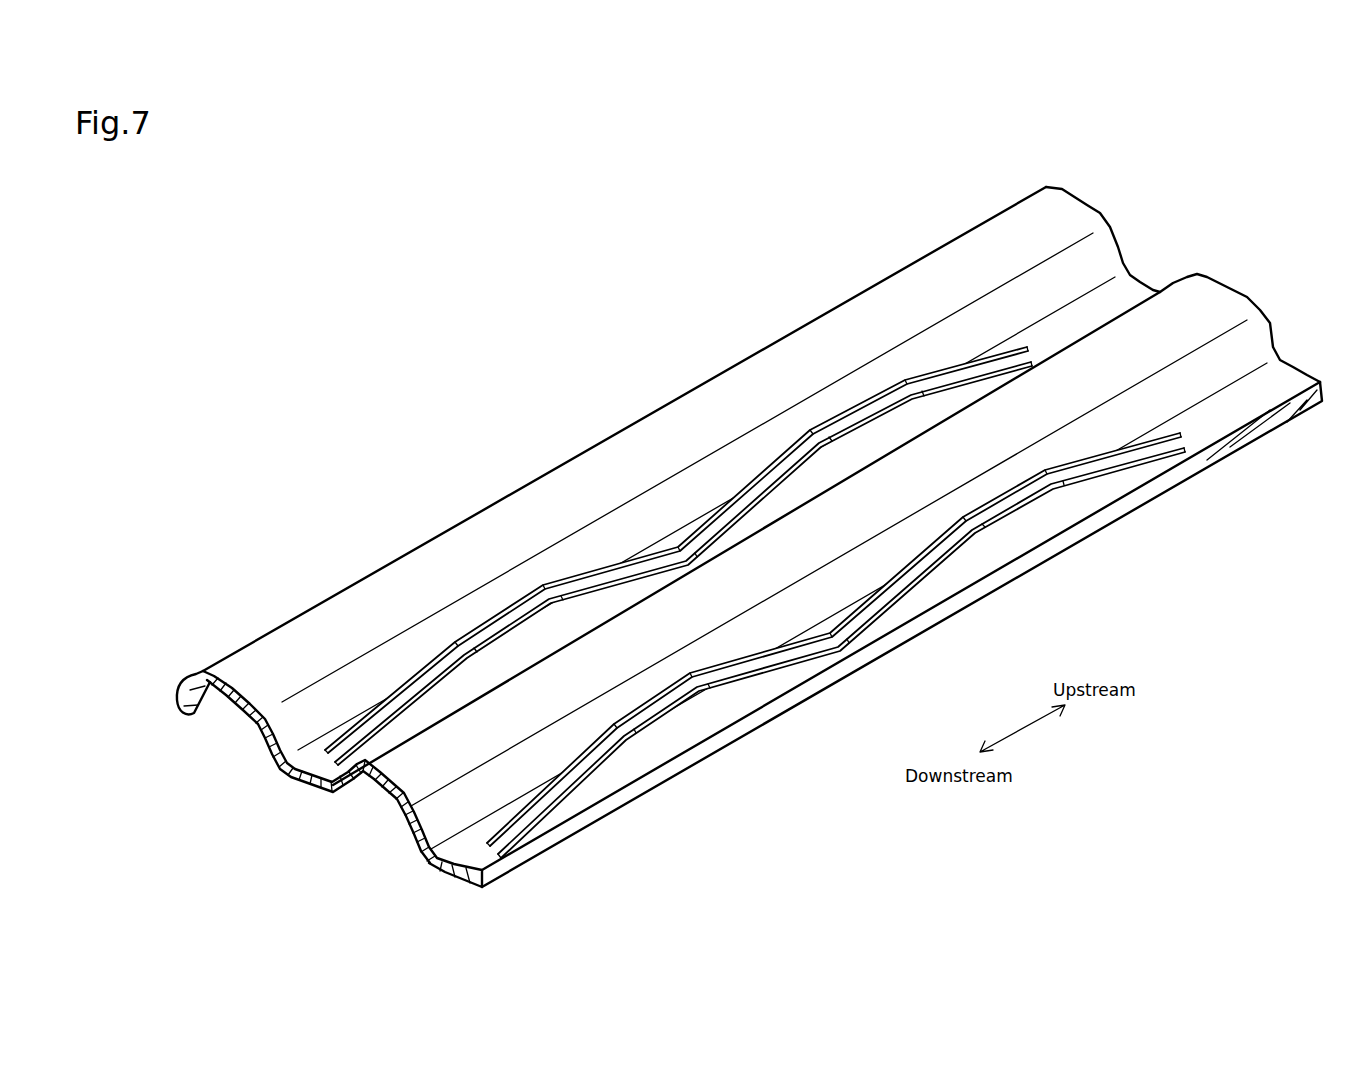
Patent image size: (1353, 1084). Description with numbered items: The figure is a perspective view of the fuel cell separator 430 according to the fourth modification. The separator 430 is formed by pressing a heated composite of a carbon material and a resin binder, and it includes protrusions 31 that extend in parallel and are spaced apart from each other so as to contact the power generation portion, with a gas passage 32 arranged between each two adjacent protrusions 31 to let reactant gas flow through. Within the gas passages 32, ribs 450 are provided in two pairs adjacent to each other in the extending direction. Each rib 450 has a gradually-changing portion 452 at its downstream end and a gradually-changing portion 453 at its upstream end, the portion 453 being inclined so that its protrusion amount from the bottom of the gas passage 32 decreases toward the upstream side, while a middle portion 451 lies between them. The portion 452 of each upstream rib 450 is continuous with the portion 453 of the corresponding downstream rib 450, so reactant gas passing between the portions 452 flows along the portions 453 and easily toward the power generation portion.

The first separator 430 is at (1210, 166).
The protrusions 31 is at (1025, 222).
The gas passages 32 is at (1133, 290).
The ribs 450 is at (853, 410).
The intermediate portion of louver 451 is at (1037, 512).
The gradually-changing portion 452 is at (945, 562).
The gradually-changing portion 453 is at (1137, 470).